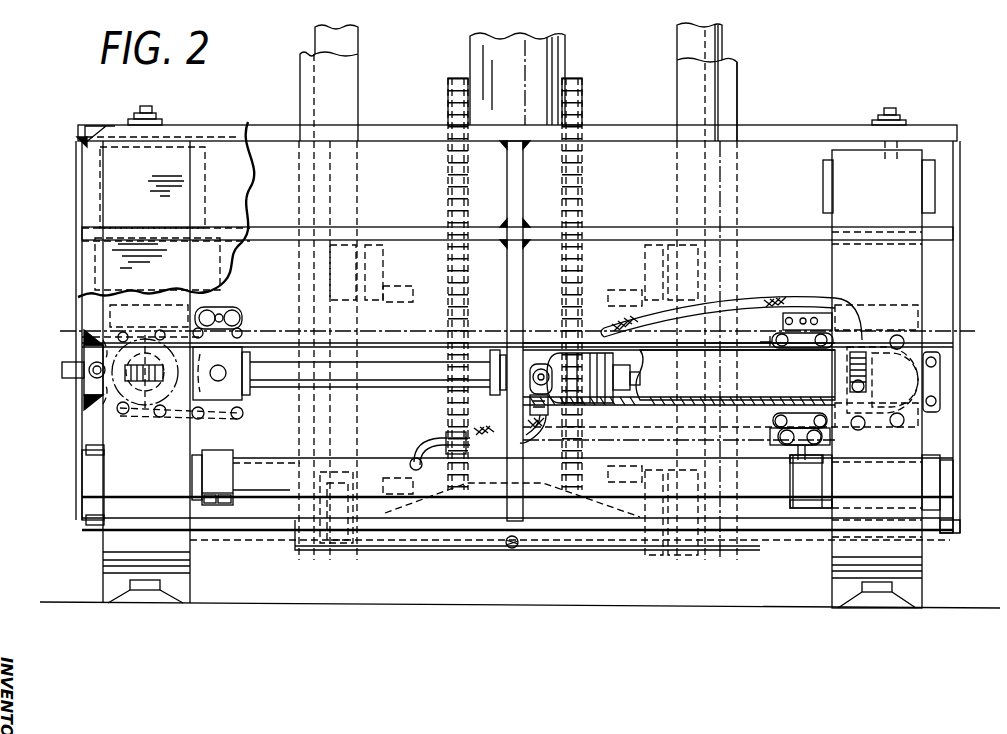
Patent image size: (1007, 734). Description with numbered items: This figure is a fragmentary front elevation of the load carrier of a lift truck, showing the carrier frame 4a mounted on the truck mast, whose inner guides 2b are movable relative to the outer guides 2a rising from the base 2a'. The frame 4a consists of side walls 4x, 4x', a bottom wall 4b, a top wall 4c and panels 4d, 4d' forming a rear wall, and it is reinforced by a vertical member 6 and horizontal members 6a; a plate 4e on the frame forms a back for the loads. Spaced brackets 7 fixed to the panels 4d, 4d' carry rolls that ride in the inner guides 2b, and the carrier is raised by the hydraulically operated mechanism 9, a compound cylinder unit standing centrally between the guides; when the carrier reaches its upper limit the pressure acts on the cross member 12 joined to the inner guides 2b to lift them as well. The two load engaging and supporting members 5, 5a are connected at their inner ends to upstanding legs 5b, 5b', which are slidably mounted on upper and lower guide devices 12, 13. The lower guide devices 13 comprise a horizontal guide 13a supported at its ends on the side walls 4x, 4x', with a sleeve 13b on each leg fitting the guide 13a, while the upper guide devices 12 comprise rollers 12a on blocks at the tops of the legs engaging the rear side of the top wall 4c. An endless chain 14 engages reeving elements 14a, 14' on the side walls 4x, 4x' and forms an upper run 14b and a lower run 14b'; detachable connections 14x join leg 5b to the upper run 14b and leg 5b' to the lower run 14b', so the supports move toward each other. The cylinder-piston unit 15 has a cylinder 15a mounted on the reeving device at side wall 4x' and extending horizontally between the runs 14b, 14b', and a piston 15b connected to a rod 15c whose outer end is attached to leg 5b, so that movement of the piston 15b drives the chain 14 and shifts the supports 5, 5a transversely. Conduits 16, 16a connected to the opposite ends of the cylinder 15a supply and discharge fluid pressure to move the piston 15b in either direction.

The guides 2a is at (757, 101).
The base 2a' is at (570, 552).
The inner guides 2b is at (682, 52).
The frame 4a is at (56, 395).
The bottom wall 4b is at (88, 524).
The top wall 4c is at (98, 130).
The panel 4d is at (166, 209).
The panel 4d' is at (176, 220).
The plate 4e is at (242, 163).
The side wall 4x is at (67, 370).
The side wall 4x' is at (914, 364).
The load engaging and supporting member 5 is at (130, 604).
The load engaging and supporting member 5a is at (868, 606).
The upstanding leg 5b is at (162, 312).
The upstanding leg 5b' is at (723, 301).
The vertical member 6 is at (524, 181).
The horizontal members 6a is at (484, 236).
The brackets 7 is at (393, 315).
The hydraulically operated mechanism 9 is at (545, 59).
The upper guide devices 12 is at (205, 106).
The rollers 12a is at (138, 112).
The lower guide devices 13 is at (275, 453).
The guide 13a is at (270, 492).
The sleeve 13b is at (220, 505).
The endless chain 14 is at (266, 442).
The reeving element 14' is at (871, 494).
The reeving element 14a is at (124, 416).
The upper run 14b is at (239, 347).
The lower run 14b' is at (442, 443).
The detachable connections 14x is at (228, 306).
The cylinder-piston unit 15 is at (774, 383).
The cylinder 15a is at (768, 428).
The piston 15b is at (616, 408).
The rod 15c is at (422, 362).
The conduit 16 is at (526, 424).
The conduit 16a is at (750, 306).